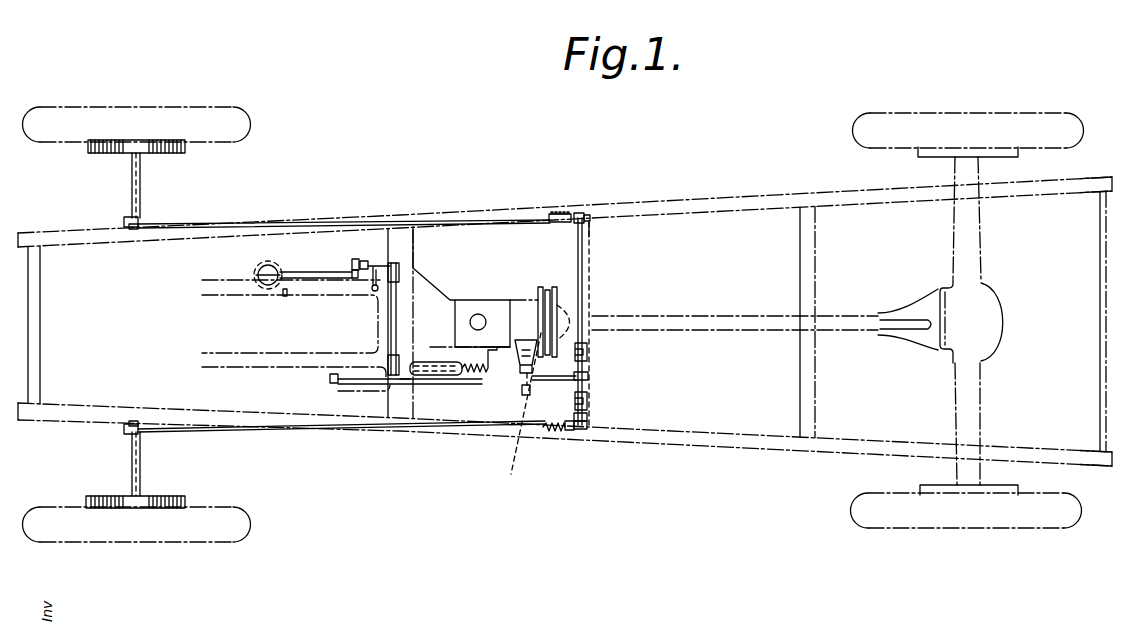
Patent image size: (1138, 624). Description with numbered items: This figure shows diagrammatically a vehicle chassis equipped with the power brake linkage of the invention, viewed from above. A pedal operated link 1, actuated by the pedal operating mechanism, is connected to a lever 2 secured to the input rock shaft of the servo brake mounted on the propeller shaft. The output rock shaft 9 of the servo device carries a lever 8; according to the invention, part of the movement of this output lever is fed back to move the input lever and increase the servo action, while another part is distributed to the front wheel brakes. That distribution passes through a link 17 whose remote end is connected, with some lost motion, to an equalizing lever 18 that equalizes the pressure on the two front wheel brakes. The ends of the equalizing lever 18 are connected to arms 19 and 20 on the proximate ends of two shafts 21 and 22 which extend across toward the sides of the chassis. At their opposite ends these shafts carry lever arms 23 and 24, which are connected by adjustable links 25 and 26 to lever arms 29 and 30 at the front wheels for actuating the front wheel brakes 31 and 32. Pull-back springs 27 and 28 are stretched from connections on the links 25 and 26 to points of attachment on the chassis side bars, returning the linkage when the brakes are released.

The pedal operated link 1 is at (503, 378).
The lever 2 is at (530, 415).
The lever 8 is at (523, 392).
The output rock shaft 9 is at (522, 395).
The link 17 is at (571, 398).
The equalizing lever 18 is at (590, 366).
The arm 19 is at (560, 432).
The arm 20 is at (577, 358).
The shaft 21 is at (585, 418).
The shaft 22 is at (585, 267).
The lever arm 23 is at (582, 435).
The lever arm 24 is at (582, 214).
The adjustable link 25 is at (338, 428).
The adjustable link 26 is at (274, 225).
The pull-back spring 27 is at (574, 433).
The pull-back spring 28 is at (557, 215).
The lever arm 29 is at (124, 432).
The lever arm 30 is at (126, 222).
The front wheel brake 31 is at (90, 500).
The front wheel brake 32 is at (90, 150).